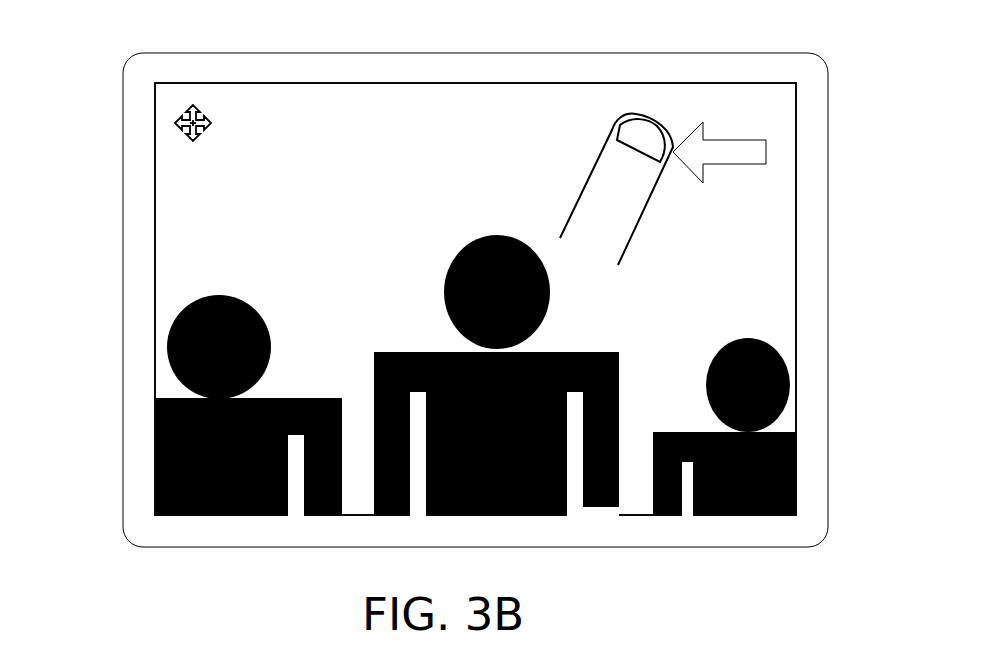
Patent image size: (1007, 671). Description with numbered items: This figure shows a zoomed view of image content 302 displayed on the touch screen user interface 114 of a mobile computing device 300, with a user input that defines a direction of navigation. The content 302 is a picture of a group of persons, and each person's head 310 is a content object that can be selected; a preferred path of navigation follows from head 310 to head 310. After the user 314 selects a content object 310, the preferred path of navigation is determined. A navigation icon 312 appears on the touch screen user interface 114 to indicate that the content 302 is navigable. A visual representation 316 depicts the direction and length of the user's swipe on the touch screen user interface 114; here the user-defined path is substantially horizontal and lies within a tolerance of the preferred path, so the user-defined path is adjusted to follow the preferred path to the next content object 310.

The mobile computing device 300 is at (260, 48).
The content 302 is at (540, 83).
The touch screen user interface 114 is at (355, 145).
The head 310 is at (443, 280).
The navigation icon 312 is at (183, 116).
The user 314 is at (653, 118).
The visual representation 316 is at (727, 140).